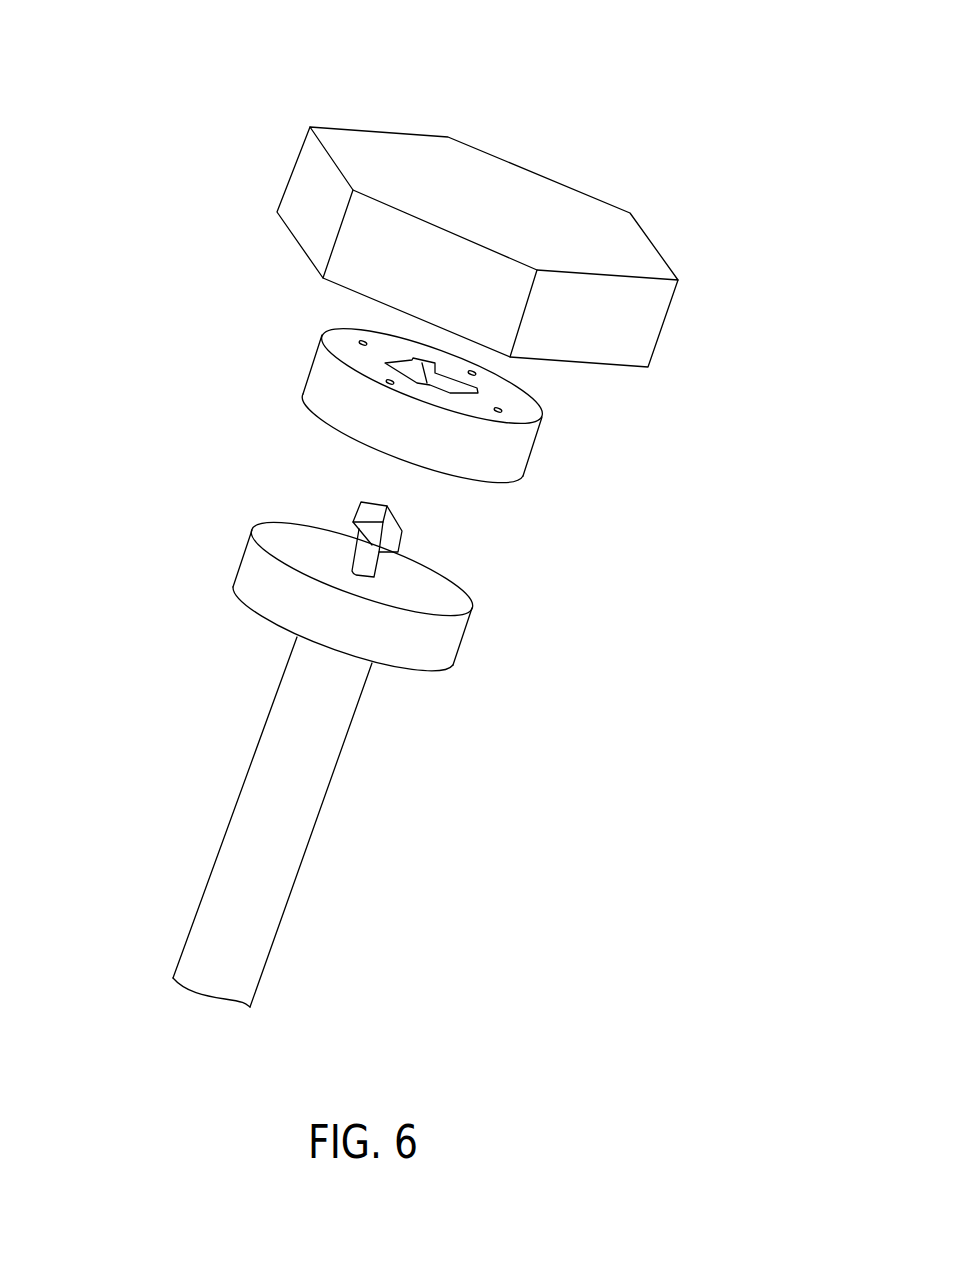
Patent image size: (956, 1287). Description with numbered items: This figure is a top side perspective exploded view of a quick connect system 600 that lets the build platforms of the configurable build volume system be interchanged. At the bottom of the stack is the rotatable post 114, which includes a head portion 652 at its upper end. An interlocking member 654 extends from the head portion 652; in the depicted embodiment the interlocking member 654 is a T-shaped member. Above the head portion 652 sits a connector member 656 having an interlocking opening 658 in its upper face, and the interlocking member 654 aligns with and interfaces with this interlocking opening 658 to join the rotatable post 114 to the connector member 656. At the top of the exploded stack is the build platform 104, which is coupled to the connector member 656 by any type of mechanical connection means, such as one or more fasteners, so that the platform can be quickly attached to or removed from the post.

The quick connect system 600 is at (133, 97).
The build platform 104 is at (535, 197).
The connector member 656 is at (347, 403).
The interlocking opening 658 is at (478, 383).
The interlocking member 654 is at (402, 529).
The head portion 652 is at (435, 640).
The rotatable post 114 is at (223, 883).